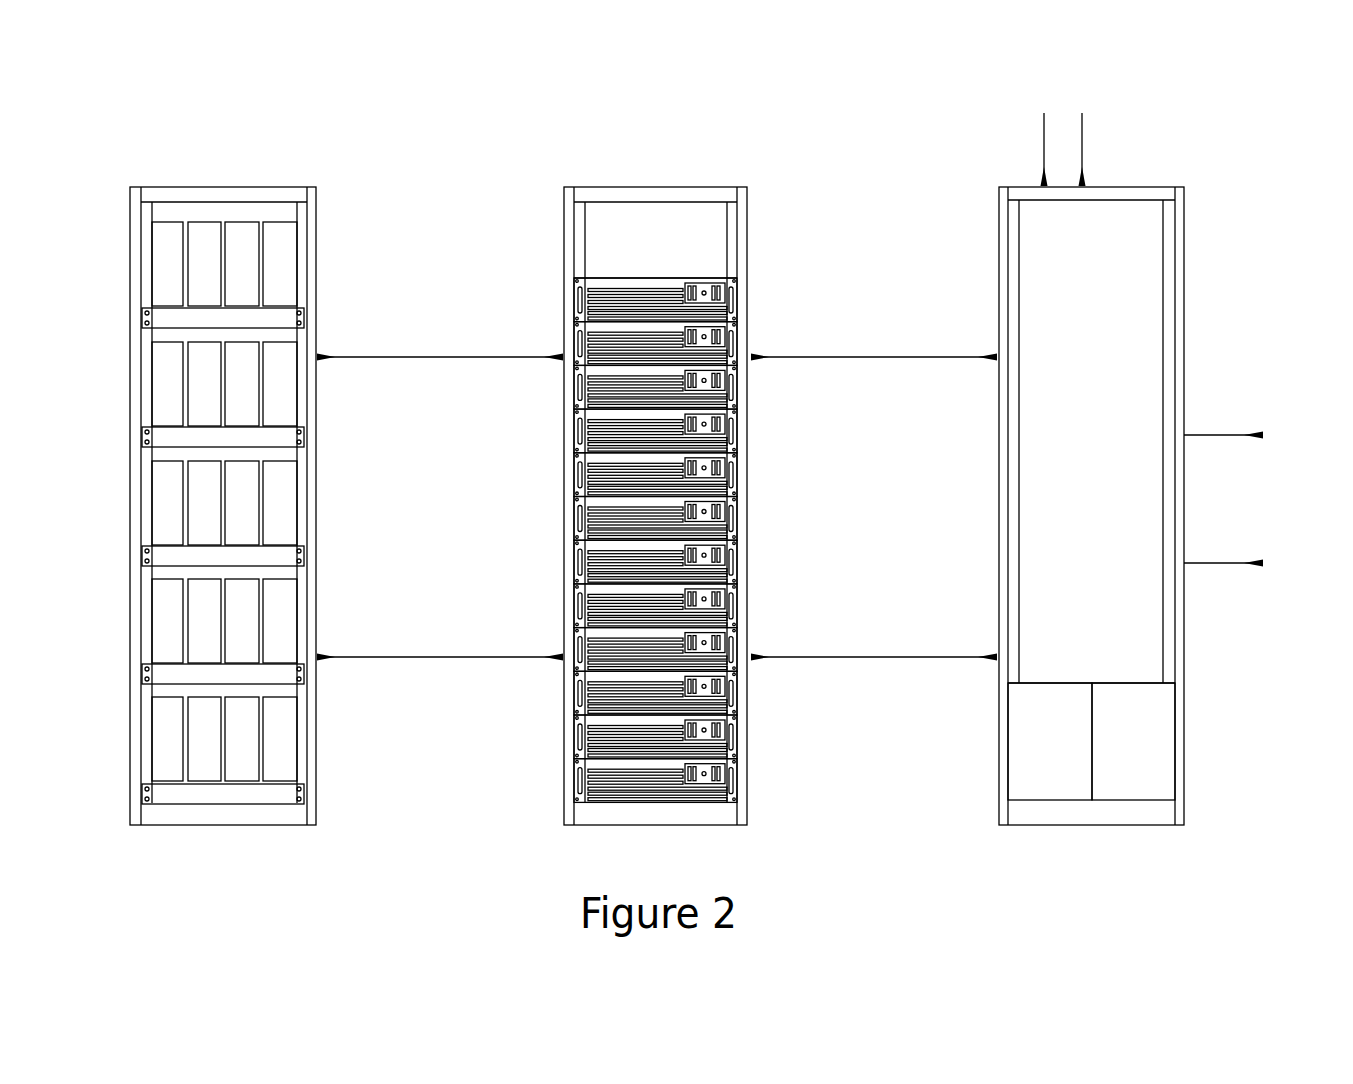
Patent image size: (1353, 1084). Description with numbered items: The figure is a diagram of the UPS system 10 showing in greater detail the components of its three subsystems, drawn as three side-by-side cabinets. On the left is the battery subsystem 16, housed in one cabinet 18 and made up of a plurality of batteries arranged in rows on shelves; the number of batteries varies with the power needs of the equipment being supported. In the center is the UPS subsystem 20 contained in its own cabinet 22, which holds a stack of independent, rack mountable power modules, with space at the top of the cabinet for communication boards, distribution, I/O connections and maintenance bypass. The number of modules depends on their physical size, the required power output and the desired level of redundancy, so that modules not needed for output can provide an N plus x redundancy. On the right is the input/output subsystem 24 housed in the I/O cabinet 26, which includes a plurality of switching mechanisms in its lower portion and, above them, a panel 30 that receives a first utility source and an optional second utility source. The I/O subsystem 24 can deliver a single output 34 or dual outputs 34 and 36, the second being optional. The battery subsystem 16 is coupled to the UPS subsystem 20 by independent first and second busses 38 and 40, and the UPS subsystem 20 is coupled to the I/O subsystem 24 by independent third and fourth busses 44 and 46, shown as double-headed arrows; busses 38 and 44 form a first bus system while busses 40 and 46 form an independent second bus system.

The UPS system 10 is at (140, 164).
The battery subsystem 16 is at (263, 503).
The cabinet 18 is at (264, 471).
The UPS subsystem 20 is at (803, 463).
The cabinet 22 is at (685, 187).
The input/output (I/O) subsystem 24 is at (1119, 501).
The I/O cabinet 26 is at (1184, 228).
The switching cabinet panel 30 is at (1035, 566).
The output 34 is at (1218, 435).
The output 36 is at (1214, 563).
The first bus 38 is at (467, 354).
The second bus 40 is at (483, 654).
The third bus 44 is at (905, 354).
The fourth bus 46 is at (905, 654).